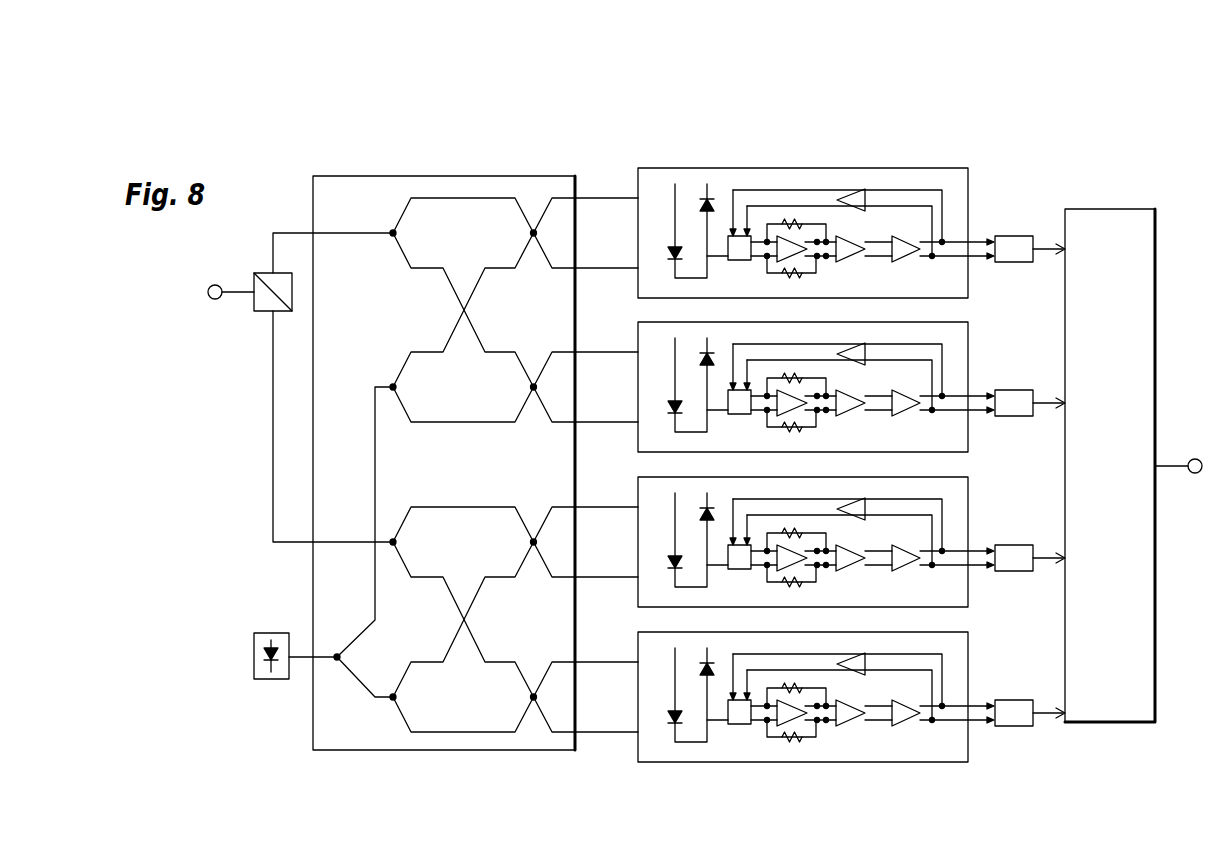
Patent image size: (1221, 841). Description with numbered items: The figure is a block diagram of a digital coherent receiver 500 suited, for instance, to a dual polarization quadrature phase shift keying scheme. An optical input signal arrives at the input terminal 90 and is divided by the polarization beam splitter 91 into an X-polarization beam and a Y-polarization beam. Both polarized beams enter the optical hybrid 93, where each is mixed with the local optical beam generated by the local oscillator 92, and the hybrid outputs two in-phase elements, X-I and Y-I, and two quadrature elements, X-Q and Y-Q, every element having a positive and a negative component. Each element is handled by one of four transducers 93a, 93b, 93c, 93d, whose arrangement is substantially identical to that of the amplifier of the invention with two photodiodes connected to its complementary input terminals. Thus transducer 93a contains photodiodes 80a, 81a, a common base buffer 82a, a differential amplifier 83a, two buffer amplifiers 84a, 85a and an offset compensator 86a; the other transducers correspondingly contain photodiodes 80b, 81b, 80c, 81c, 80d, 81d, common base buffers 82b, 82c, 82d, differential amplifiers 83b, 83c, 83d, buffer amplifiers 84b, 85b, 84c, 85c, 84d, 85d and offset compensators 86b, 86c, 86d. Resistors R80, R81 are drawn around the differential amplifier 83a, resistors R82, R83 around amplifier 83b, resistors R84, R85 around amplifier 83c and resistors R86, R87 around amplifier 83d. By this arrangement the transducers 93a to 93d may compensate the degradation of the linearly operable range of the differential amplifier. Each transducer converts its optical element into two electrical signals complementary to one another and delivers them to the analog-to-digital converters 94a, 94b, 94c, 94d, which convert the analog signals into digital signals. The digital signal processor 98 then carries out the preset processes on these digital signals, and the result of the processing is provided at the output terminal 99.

The digital coherent receiver 500 is at (284, 718).
The input terminal 90 is at (215, 284).
The polarization beam splitter 91 is at (259, 273).
The local oscillator 92 is at (261, 633).
The optical hybrid 93 is at (313, 193).
The transducer 93a is at (968, 171).
The transducer 93b is at (968, 325).
The transducer 93c is at (968, 480).
The transducer 93d is at (968, 635).
The analog-to-digital converter 94a is at (1011, 235).
The analog-to-digital converter 94b is at (1011, 389).
The analog-to-digital converter 94c is at (1011, 544).
The analog-to-digital converter 94d is at (1011, 699).
The digital signal processor 98 is at (1135, 209).
The output terminal 99 is at (1195, 458).
The photodiode 80a is at (666, 238).
The photodiode 80b is at (666, 392).
The photodiode 80c is at (666, 547).
The photodiode 80d is at (666, 702).
The photodiode 81a is at (699, 217).
The photodiode 81b is at (699, 371).
The photodiode 81c is at (699, 526).
The photodiode 81d is at (699, 681).
The common base buffer 82a is at (733, 262).
The common base buffer 82b is at (733, 416).
The common base buffer 82c is at (733, 571).
The common base buffer 82d is at (733, 726).
The differential amplifier 83a is at (794, 263).
The differential amplifier 83b is at (794, 417).
The differential amplifier 83c is at (794, 572).
The differential amplifier 83d is at (794, 727).
The buffer amplifier 84a is at (844, 263).
The buffer amplifier 84b is at (844, 417).
The buffer amplifier 84c is at (844, 572).
The buffer amplifier 84d is at (844, 727).
The buffer amplifier 85a is at (899, 263).
The buffer amplifier 85b is at (899, 417).
The buffer amplifier 85c is at (899, 572).
The buffer amplifier 85d is at (899, 727).
The offset compensator 86a is at (868, 190).
The offset compensator 86b is at (868, 344).
The offset compensator 86c is at (868, 499).
The offset compensator 86d is at (868, 654).
The feedback resistor R80 is at (790, 221).
The feedback resistor R81 is at (792, 276).
The feedback resistor R82 is at (790, 375).
The feedback resistor R83 is at (792, 430).
The feedback resistor R84 is at (790, 530).
The feedback resistor R85 is at (792, 585).
The feedback resistor R86 is at (790, 685).
The feedback resistor R87 is at (792, 740).